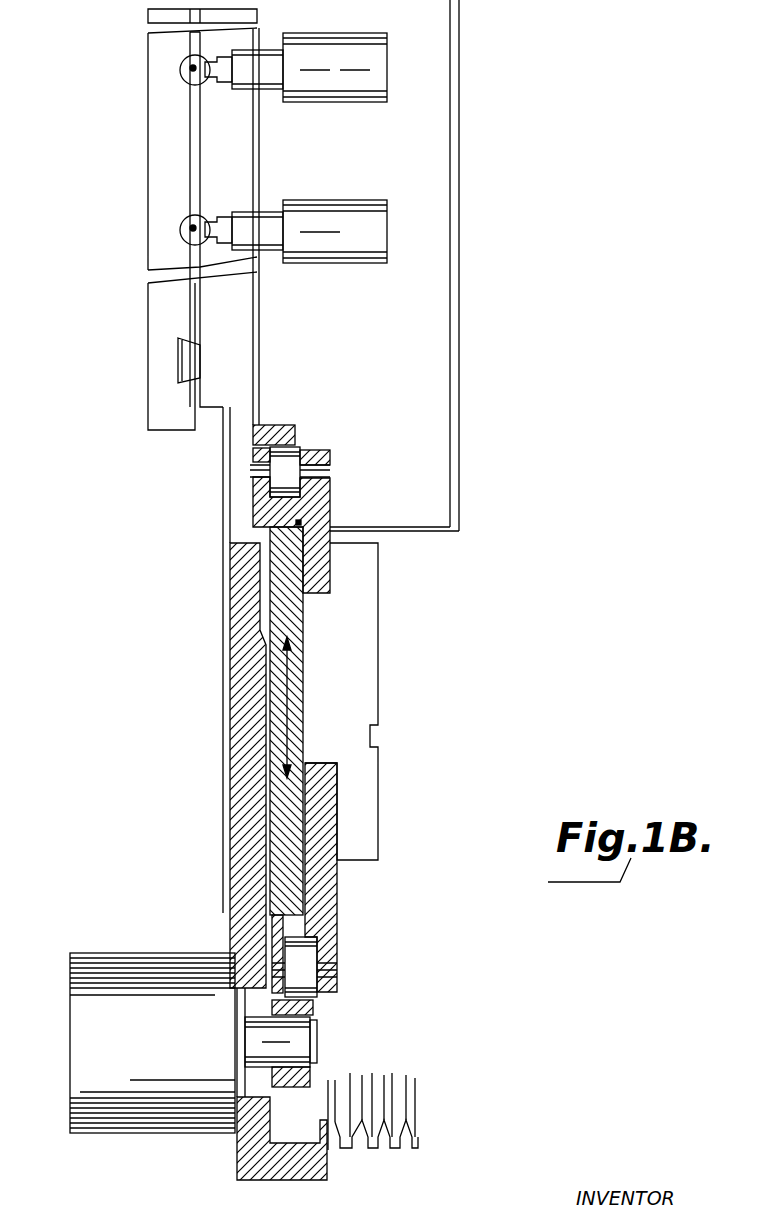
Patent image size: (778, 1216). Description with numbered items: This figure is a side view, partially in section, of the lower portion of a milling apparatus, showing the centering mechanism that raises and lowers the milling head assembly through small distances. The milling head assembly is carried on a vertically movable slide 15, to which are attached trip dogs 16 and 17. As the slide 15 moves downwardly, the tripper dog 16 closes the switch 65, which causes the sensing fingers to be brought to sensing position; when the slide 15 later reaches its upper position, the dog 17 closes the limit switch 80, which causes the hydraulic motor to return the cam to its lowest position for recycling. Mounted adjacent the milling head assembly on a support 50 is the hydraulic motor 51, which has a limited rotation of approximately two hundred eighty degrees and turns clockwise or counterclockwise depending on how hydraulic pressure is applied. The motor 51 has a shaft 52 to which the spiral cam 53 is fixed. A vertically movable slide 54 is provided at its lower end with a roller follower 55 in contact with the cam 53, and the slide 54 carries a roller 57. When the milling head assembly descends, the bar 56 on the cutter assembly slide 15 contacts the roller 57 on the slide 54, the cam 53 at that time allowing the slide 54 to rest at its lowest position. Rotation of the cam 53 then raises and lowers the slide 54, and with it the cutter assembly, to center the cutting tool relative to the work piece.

The vertically movable slide 15 is at (165, 190).
The trip dog 16 is at (188, 40).
The trip dog 17 is at (190, 362).
The switch 65 is at (372, 77).
The limit switch 80 is at (352, 253).
The bar 56 is at (294, 436).
The roller 57 is at (277, 460).
The support 50 is at (248, 670).
The vertically movable slide 54 is at (307, 641).
The roller follower 55 is at (295, 959).
The spiral cam 53 is at (317, 1012).
The shaft 52 is at (287, 1044).
The hydraulic motor 51 is at (167, 1127).